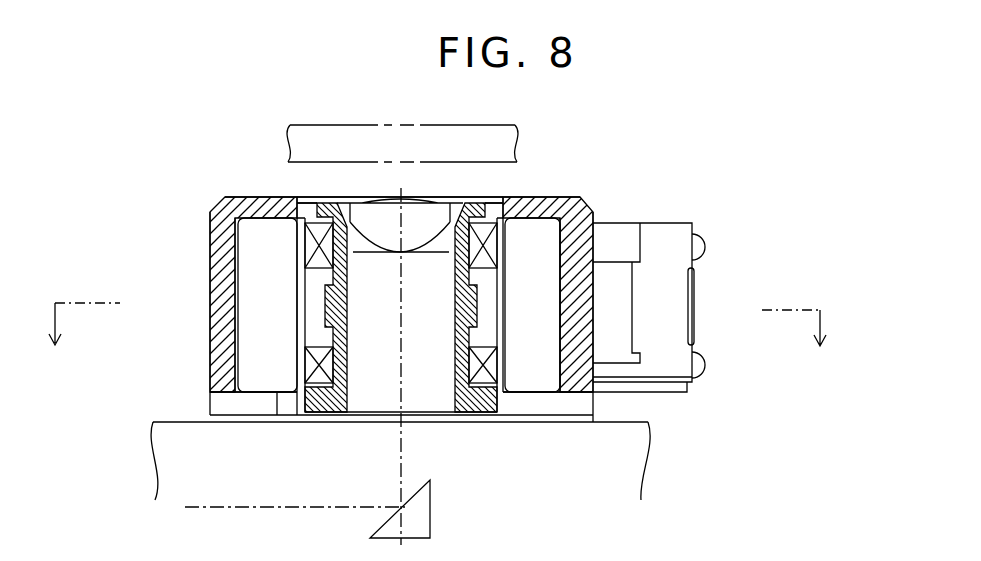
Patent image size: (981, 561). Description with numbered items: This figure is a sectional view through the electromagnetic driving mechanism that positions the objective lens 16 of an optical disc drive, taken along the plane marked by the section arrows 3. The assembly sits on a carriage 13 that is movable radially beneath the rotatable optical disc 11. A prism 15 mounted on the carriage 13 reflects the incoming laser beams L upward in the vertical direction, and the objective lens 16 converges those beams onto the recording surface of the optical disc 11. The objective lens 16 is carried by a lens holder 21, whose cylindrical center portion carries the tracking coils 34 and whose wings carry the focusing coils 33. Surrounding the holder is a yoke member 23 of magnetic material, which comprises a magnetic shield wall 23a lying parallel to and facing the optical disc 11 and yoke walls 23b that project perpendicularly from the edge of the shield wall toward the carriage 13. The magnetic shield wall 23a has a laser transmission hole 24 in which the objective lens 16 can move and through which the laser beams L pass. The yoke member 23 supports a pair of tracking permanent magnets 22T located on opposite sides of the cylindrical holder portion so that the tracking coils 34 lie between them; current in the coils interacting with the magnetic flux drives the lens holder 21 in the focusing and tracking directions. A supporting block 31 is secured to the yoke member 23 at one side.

The optical disc 11 is at (522, 134).
The carriage 13 is at (178, 430).
The prism 15 is at (433, 517).
The objective lens 16 is at (410, 246).
The lens holder 21 is at (456, 419).
The tracking permanent magnets 22T is at (557, 436).
The yoke member 23 is at (360, 309).
The magnetic shield wall 23a is at (250, 197).
The yoke walls 23b is at (220, 313).
The laser transmission hole 24 is at (506, 210).
The supporting block 31 is at (676, 311).
The focusing coils 33 is at (310, 360).
The tracking coils 34 is at (492, 362).
The section line 3 is at (435, 343).
The laser beams L is at (252, 506).